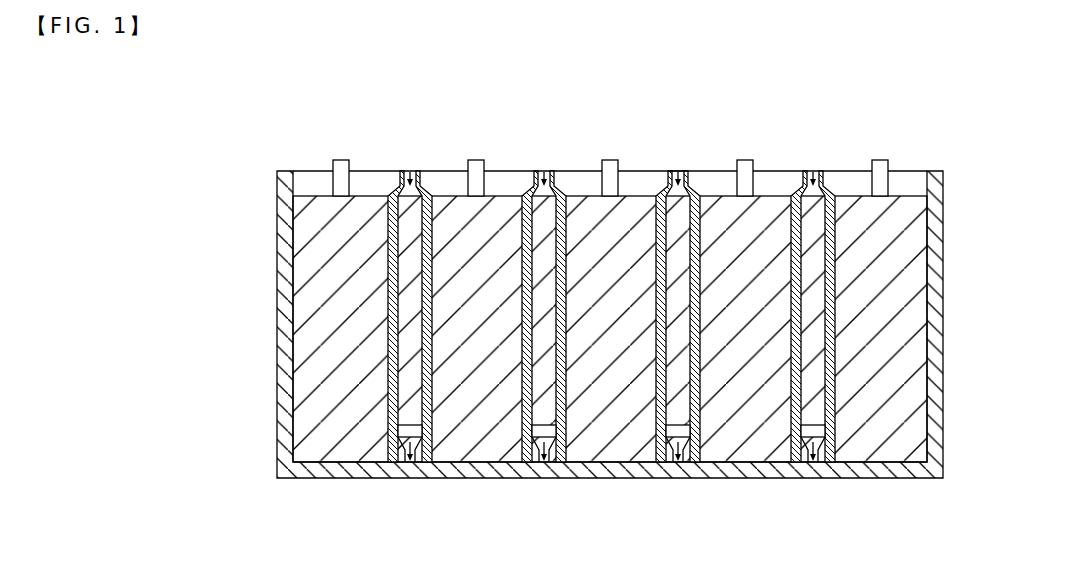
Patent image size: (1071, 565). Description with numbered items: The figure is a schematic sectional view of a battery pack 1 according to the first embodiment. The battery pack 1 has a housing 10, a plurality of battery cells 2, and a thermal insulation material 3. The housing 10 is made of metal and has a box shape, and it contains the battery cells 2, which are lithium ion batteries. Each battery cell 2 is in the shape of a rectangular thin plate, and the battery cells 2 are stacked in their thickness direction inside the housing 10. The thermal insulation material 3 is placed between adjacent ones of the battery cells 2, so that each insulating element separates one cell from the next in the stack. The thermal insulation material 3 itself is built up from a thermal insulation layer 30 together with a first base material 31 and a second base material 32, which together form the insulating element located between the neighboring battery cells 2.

The battery pack 1 is at (895, 110).
The battery cell 2 is at (467, 437).
The thermal insulation material 3 is at (677, 317).
The thermal insulation layer 30 is at (643, 197).
The first base material 31 is at (658, 447).
The second base material 32 is at (697, 446).
The housing 10 is at (847, 468).